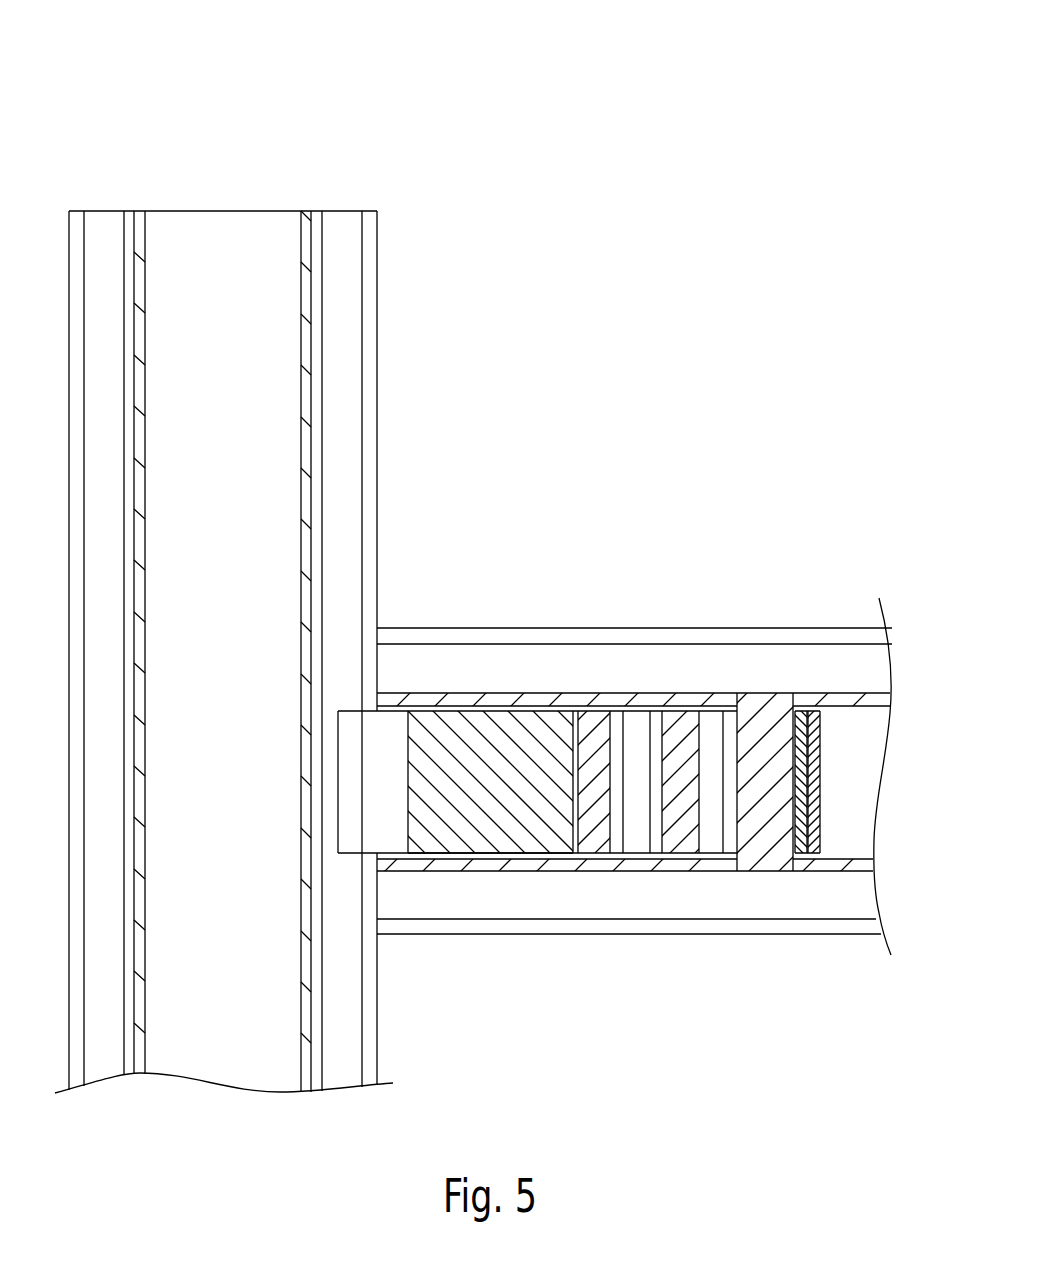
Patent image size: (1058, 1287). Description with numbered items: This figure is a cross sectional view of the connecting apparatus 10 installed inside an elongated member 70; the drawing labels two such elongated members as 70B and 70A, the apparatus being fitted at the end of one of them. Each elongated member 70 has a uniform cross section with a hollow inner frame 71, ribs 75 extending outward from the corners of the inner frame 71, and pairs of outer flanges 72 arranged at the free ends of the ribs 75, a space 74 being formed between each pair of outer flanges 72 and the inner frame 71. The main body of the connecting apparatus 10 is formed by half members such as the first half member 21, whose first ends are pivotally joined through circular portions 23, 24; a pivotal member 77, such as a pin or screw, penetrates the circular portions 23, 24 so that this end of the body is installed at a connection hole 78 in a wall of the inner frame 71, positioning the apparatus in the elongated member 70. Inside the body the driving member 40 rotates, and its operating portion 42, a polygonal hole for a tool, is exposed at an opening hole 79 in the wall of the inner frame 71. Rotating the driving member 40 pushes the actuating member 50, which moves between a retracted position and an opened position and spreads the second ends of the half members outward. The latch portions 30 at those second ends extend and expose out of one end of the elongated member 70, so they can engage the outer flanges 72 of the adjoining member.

The elongated member 70 is at (473, 555).
The first carrier board 70A is at (742, 618).
The second carrier board 70B is at (160, 168).
The inner frame 71 is at (300, 247).
The outer flanges 72 is at (370, 362).
The space 74 is at (340, 439).
The ribs 75 is at (341, 242).
The latch portions 30 is at (347, 723).
The first half member 21 is at (393, 725).
The connecting apparatus 10 is at (535, 707).
The actuating member 50 is at (481, 822).
The opening hole 79 is at (617, 697).
The operating portion 42 is at (639, 727).
The driving member 40 is at (688, 718).
The pivotal member 77 is at (768, 718).
The connection hole 78 is at (807, 779).
The circular portion 23 is at (802, 842).
The circular portion 24 is at (817, 808).